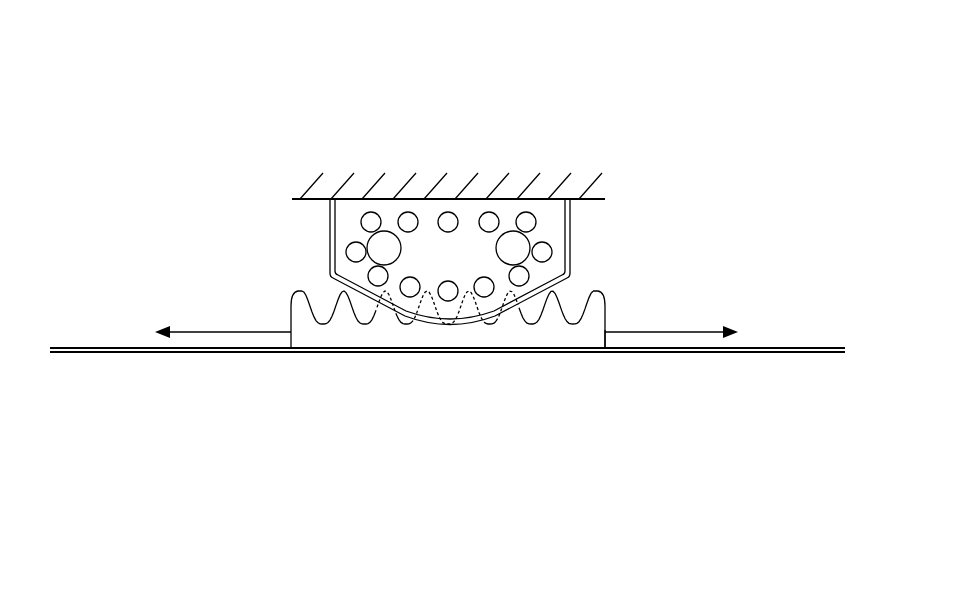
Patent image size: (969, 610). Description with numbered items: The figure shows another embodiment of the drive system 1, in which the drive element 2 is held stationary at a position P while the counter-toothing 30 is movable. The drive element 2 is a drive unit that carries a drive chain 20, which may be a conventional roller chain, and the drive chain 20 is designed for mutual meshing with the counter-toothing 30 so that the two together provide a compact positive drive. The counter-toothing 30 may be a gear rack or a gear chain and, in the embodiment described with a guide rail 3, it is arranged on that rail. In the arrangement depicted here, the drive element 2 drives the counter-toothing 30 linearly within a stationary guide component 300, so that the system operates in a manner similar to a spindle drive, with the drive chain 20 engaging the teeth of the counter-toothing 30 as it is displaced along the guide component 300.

The drive system 1 is at (638, 110).
The drive element 2 is at (473, 236).
The guide rail 3 is at (460, 194).
The position P is at (312, 185).
The drive chain 20 is at (347, 252).
The counter-toothing 30 is at (388, 324).
The guide component 300 is at (611, 353).